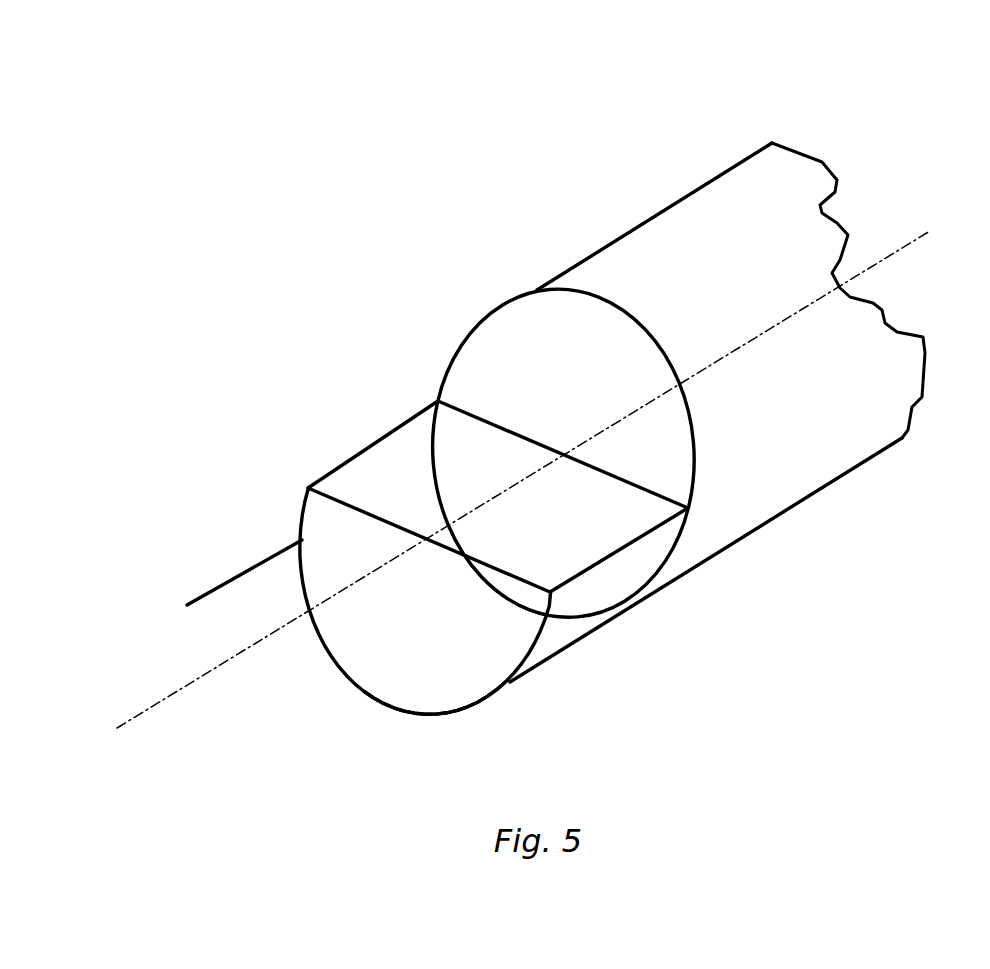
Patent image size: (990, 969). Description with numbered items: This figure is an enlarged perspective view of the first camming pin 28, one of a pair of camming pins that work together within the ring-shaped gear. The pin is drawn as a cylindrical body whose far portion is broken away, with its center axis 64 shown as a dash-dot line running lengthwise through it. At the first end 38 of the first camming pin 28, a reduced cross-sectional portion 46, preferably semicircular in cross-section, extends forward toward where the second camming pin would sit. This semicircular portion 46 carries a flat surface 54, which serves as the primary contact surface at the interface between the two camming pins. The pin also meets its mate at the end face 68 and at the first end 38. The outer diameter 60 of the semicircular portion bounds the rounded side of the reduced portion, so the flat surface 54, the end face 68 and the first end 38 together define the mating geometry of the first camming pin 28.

The first camming pin 28 is at (604, 205).
The first end 38 is at (515, 350).
The reduced cross-sectional portion 46 is at (447, 673).
The flat surface 54 is at (397, 482).
The outer diameter 60 is at (223, 586).
The center axis 64 is at (213, 673).
The end face 68 is at (388, 667).